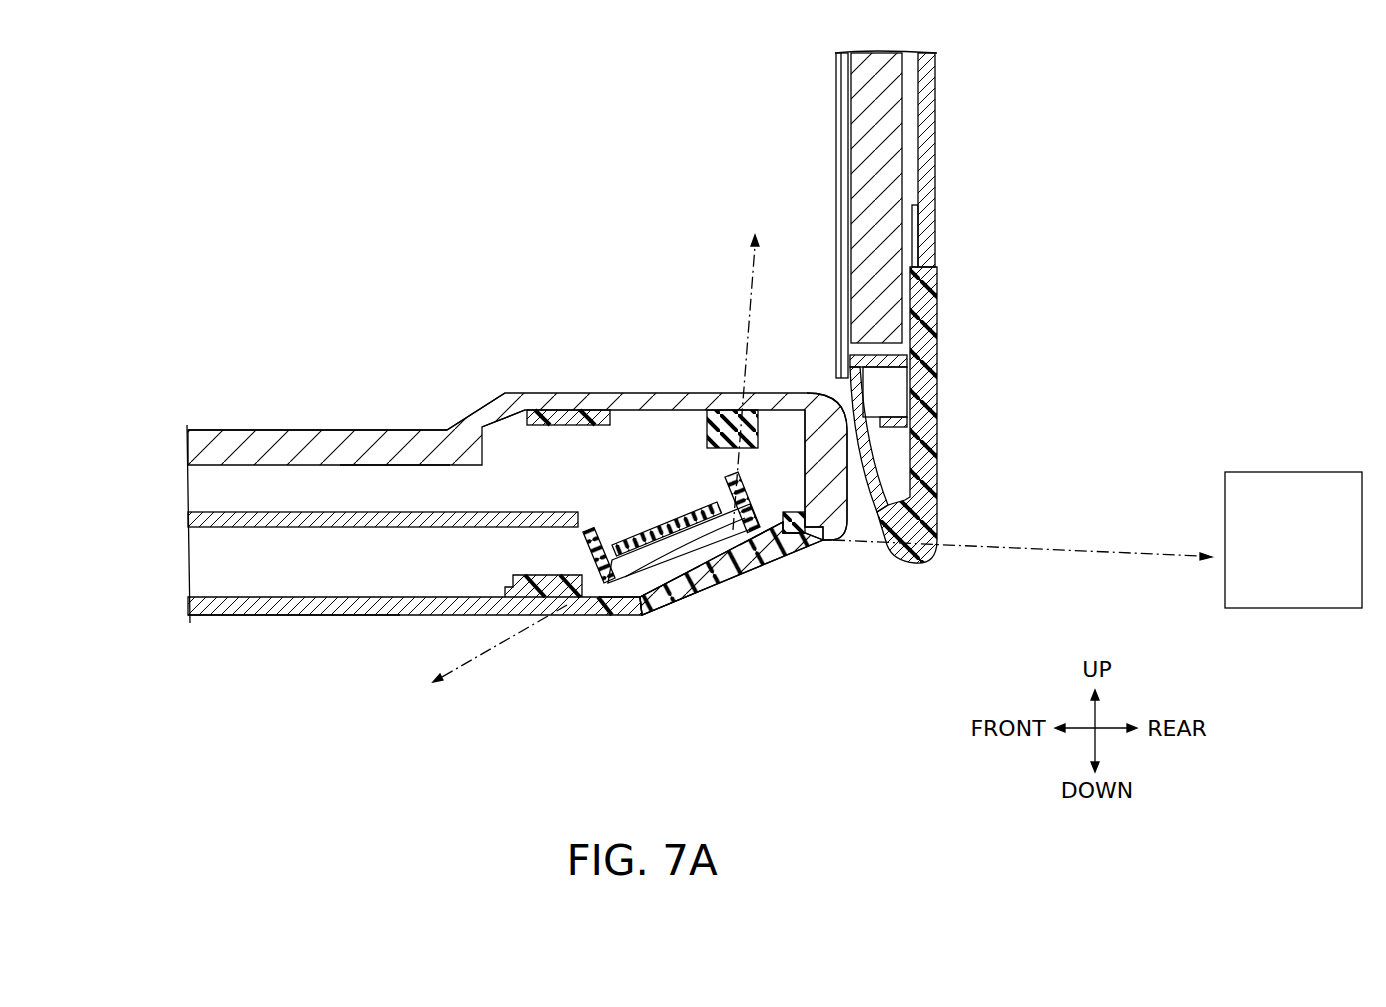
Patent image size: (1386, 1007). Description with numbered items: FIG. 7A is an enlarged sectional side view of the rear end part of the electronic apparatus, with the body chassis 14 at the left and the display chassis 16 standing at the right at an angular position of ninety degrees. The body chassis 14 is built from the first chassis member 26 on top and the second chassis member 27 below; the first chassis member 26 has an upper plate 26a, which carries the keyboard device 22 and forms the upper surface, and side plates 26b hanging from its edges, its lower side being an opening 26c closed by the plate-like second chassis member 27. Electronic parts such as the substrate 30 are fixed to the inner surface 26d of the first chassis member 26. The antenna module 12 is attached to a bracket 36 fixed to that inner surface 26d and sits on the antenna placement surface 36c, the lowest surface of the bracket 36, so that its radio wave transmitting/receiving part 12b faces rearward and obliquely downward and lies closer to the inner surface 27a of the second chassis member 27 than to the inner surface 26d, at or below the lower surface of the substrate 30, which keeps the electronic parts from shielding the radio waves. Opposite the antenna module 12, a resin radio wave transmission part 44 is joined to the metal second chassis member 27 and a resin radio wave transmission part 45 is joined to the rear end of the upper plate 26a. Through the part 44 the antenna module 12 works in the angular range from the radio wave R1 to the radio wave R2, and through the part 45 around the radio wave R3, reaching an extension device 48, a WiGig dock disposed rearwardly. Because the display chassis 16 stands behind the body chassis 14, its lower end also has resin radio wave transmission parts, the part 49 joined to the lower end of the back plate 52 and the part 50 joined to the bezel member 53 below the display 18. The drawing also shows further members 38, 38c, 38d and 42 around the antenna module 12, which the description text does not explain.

The antenna module 12 is at (681, 574).
The radio wave transmitting/receiving part 12b is at (643, 553).
The body chassis 14 is at (244, 662).
The display chassis 16 is at (975, 123).
The display 18 is at (860, 108).
The keyboard device 22 is at (243, 430).
The first chassis member 26 is at (300, 420).
The upper plate 26a is at (524, 397).
The side plates 26b is at (838, 470).
The opening 26c is at (778, 520).
The inner surface 26d is at (390, 472).
The second chassis member 27 is at (321, 624).
The inner surface of the second chassis member 27a is at (647, 613).
The substrate 30 is at (393, 528).
The bracket 36 is at (701, 407).
The antenna placement surface 36c is at (690, 505).
The elastic member 38 is at (692, 626).
The elastic member base portion 38c is at (585, 617).
The elastic member end portion 38d is at (756, 532).
The cushion member 42 is at (673, 520).
The radio wave transmission part 44 is at (645, 613).
The radio wave transmission part 45 is at (613, 395).
The extension device 48 is at (1295, 592).
The radio wave transmission part 49 is at (930, 390).
The radio wave transmission part 50 is at (895, 482).
The back plate 52 is at (935, 160).
The bezel member 53 is at (840, 352).
The radio wave R1 is at (1022, 570).
The radio wave R2 is at (482, 655).
The radio wave R3 is at (753, 365).